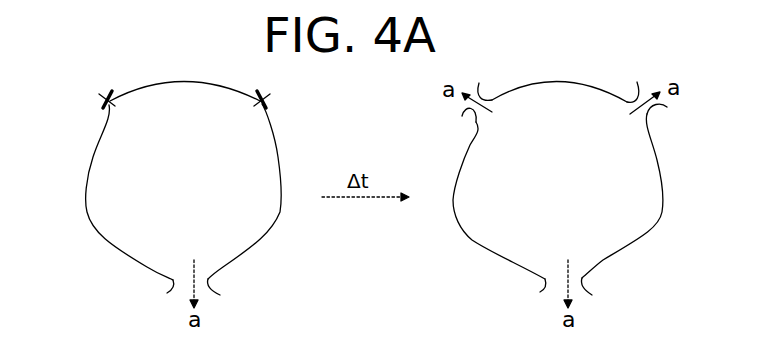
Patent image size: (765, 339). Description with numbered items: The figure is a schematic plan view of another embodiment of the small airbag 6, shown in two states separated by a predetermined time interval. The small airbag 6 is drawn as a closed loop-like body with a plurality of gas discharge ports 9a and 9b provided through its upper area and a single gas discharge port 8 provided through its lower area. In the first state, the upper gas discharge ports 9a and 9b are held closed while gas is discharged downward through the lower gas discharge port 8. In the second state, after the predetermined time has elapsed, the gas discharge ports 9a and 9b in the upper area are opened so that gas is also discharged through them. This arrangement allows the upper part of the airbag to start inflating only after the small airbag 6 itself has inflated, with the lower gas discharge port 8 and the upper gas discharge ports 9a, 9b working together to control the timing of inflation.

The small airbag 6 is at (86, 190).
The gas discharge port 8 is at (173, 281).
The gas discharge port 9a is at (103, 104).
The gas discharge port 9b is at (273, 107).